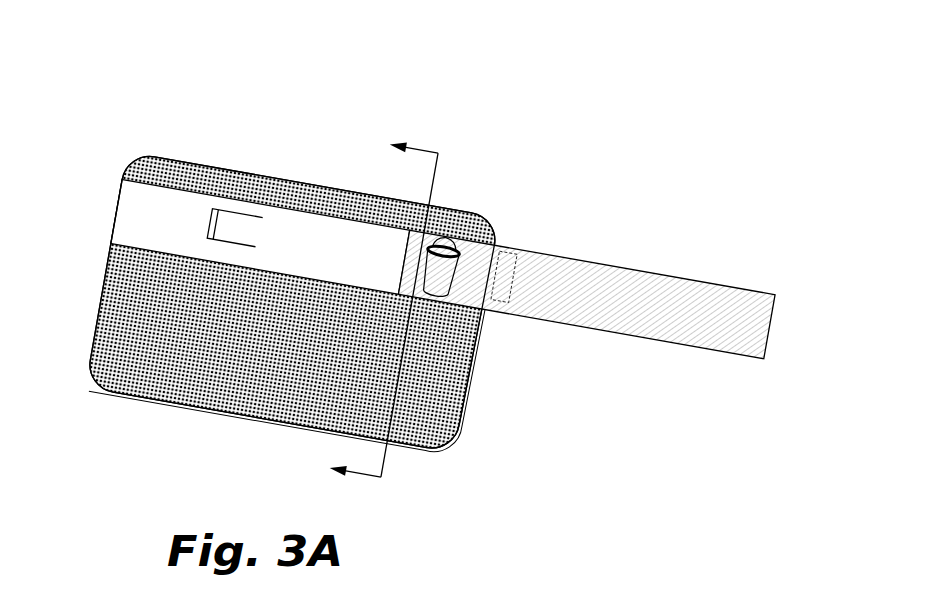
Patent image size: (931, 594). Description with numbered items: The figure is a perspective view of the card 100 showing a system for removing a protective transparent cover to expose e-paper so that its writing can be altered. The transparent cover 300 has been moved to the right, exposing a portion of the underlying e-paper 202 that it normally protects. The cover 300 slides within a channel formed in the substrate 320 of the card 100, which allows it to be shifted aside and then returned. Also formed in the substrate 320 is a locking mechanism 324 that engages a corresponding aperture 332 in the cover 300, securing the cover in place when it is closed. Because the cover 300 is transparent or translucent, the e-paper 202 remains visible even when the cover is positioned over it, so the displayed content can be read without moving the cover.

The card 100 is at (108, 103).
The e-paper 202 is at (122, 226).
The transparent cover 300 is at (590, 283).
The substrate 320 is at (127, 370).
The locking mechanism 324 is at (244, 221).
The aperture 332 is at (507, 253).